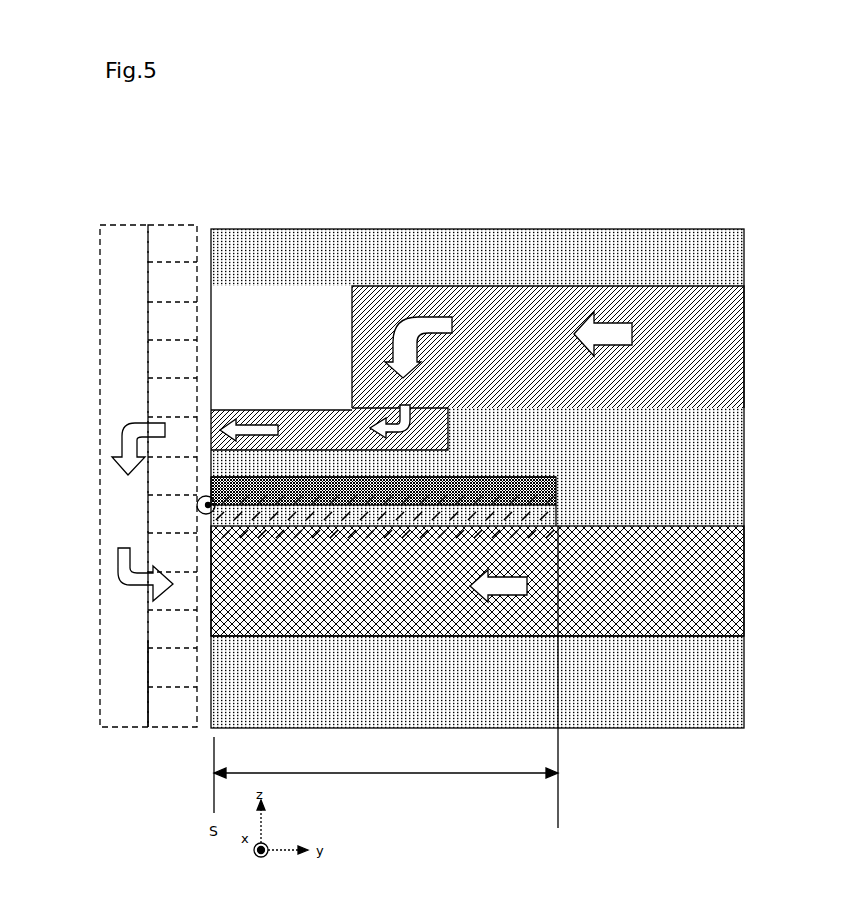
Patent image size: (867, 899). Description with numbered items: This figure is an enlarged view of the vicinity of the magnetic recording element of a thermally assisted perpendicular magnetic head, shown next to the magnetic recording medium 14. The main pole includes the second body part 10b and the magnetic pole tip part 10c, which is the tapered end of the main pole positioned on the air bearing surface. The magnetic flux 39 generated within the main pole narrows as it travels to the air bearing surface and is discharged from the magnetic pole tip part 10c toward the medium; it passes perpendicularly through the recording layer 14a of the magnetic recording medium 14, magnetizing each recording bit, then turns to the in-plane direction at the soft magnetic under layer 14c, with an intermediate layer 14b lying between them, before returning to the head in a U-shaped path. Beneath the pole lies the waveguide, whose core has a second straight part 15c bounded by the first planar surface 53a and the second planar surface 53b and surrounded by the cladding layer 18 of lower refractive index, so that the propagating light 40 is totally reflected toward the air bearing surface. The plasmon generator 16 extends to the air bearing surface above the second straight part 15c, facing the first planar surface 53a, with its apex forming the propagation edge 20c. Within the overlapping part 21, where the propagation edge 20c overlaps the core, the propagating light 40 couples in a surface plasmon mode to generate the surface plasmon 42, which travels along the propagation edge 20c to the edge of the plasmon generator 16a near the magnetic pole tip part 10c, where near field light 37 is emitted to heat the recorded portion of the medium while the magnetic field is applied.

The magnetic recording medium 14 is at (166, 470).
The recording layer 14a is at (172, 730).
The second layer of element 14 14b is at (149, 213).
The under layer 14c is at (125, 730).
The second body part 10b is at (456, 287).
The magnetic pole tip part 10c is at (267, 410).
The plasmon generator 16 is at (522, 478).
The edge of the plasmon generator 16a is at (203, 505).
The cladding layer 18 is at (746, 446).
The second straight part 15c is at (746, 592).
The propagation edge 20c is at (578, 560).
The overlapping part 21 is at (407, 774).
The near field light 37 is at (200, 497).
The magnetic flux 39 is at (418, 317).
The propagating light 40 is at (500, 601).
The surface plasmon 42 is at (375, 538).
The first planar surface 53a is at (597, 527).
The second planar surface 53b is at (634, 637).